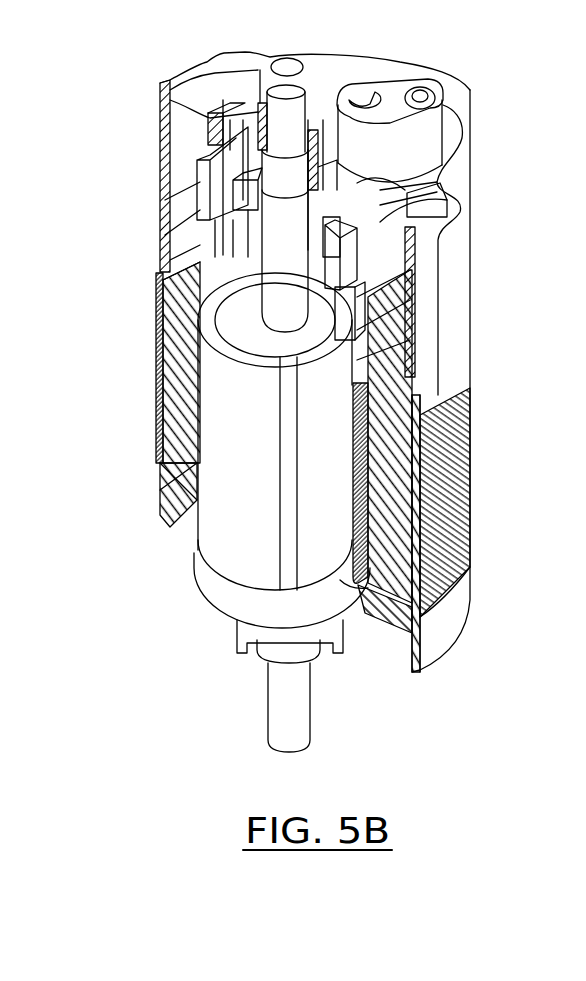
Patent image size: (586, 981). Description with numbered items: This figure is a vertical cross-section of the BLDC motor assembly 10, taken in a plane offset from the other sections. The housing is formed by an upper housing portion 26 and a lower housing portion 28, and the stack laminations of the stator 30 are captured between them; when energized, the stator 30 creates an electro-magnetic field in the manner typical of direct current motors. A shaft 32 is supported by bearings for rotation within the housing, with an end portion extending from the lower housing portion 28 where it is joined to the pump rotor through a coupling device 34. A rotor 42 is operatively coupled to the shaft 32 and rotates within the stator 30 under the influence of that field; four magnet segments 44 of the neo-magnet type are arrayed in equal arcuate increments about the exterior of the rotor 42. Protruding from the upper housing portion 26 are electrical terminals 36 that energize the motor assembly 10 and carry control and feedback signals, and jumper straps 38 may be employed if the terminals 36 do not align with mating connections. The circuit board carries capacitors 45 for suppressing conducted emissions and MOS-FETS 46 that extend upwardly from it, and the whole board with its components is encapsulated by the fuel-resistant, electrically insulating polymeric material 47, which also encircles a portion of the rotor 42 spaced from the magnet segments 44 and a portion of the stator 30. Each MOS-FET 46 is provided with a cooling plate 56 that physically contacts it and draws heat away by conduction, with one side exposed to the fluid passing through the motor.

The motor assembly 10 is at (480, 725).
The upper housing portion 26 is at (160, 100).
The lower housing portion 28 is at (445, 650).
The stator 30 is at (168, 360).
The shaft 32 is at (267, 677).
The coupling device 34 is at (237, 642).
The electrical terminals 36 is at (432, 100).
The jumper straps 38 is at (403, 166).
The rotor 42 is at (237, 327).
The magnet segments 44 is at (207, 533).
The capacitors 45 is at (160, 287).
The MOS-FETS 46 is at (203, 185).
The polymeric material 47 is at (208, 140).
The cooling plate 56 is at (193, 222).